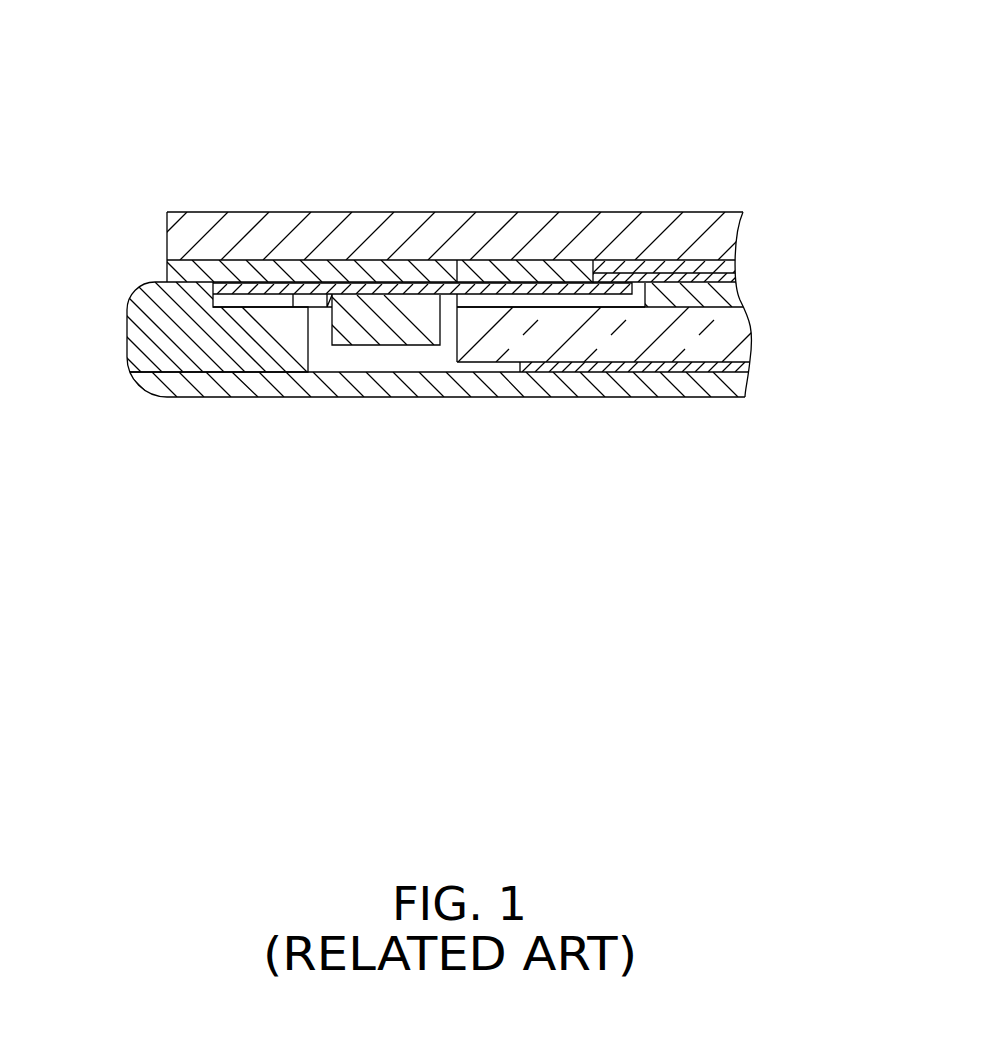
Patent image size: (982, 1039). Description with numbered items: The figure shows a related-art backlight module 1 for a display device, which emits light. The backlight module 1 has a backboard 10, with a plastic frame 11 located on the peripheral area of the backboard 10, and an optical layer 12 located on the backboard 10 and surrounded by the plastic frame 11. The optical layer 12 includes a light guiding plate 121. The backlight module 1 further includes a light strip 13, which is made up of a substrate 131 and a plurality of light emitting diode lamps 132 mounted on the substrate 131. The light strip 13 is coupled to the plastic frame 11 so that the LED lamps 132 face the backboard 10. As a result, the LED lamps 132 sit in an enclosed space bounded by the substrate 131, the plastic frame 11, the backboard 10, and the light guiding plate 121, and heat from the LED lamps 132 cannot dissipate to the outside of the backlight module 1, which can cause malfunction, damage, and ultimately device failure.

The backlight module 1 is at (435, 32).
The backboard 10 is at (403, 382).
The plastic frame 11 is at (150, 322).
The optical layer 12 is at (784, 303).
The light guiding plate 121 is at (722, 343).
The light strip 13 is at (423, 236).
The substrate 131 is at (303, 285).
The LED lamps 132 is at (387, 310).